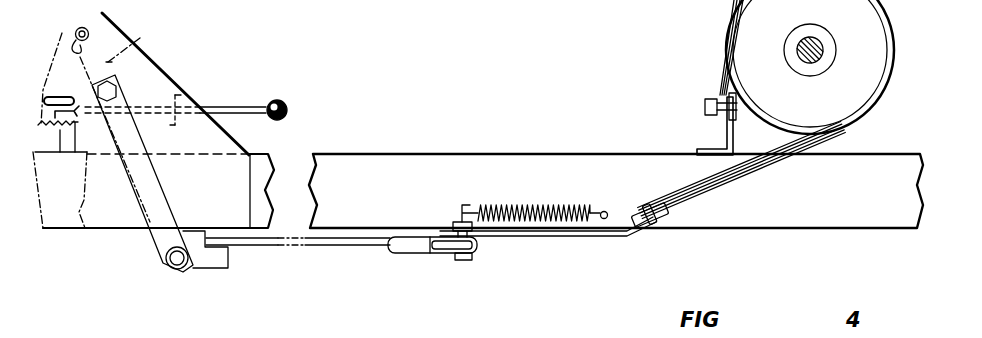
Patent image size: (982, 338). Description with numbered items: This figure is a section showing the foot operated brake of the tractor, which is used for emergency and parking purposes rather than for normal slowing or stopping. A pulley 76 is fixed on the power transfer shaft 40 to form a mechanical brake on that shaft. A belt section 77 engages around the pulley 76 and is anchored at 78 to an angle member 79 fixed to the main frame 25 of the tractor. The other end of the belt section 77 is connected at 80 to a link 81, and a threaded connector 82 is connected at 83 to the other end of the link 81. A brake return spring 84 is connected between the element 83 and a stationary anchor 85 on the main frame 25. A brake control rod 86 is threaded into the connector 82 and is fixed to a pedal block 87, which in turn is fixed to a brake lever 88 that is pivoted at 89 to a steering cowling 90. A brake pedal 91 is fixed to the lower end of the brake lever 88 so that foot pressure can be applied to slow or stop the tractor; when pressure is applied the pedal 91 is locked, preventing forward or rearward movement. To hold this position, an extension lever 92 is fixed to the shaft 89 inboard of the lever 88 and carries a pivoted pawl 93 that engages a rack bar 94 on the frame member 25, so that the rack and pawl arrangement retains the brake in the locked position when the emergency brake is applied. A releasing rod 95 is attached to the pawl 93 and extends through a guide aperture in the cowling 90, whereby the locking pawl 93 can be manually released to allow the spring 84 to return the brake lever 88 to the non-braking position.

The main frame 25 is at (263, 190).
The power transfer shaft 40 is at (813, 63).
The pulley 76 is at (732, 23).
The belt section 77 is at (743, 175).
The anchor 78 is at (707, 107).
The angle member 79 is at (713, 148).
The connection 80 is at (658, 226).
The link 81 is at (548, 236).
The threaded connector 82 is at (400, 253).
The connection element 83 is at (467, 260).
The brake return spring 84 is at (503, 207).
The stationary anchor 85 is at (605, 211).
The brake control rod 86 is at (270, 247).
The pedal block 87 is at (217, 261).
The brake lever 88 is at (162, 207).
The pivot shaft 89 is at (116, 90).
The steering cowling 90 is at (172, 80).
The brake pedal 91 is at (185, 268).
The extension lever 92 is at (140, 43).
The pawl 93 is at (74, 31).
The rack bar 94 is at (53, 158).
The releasing rod 95 is at (237, 108).